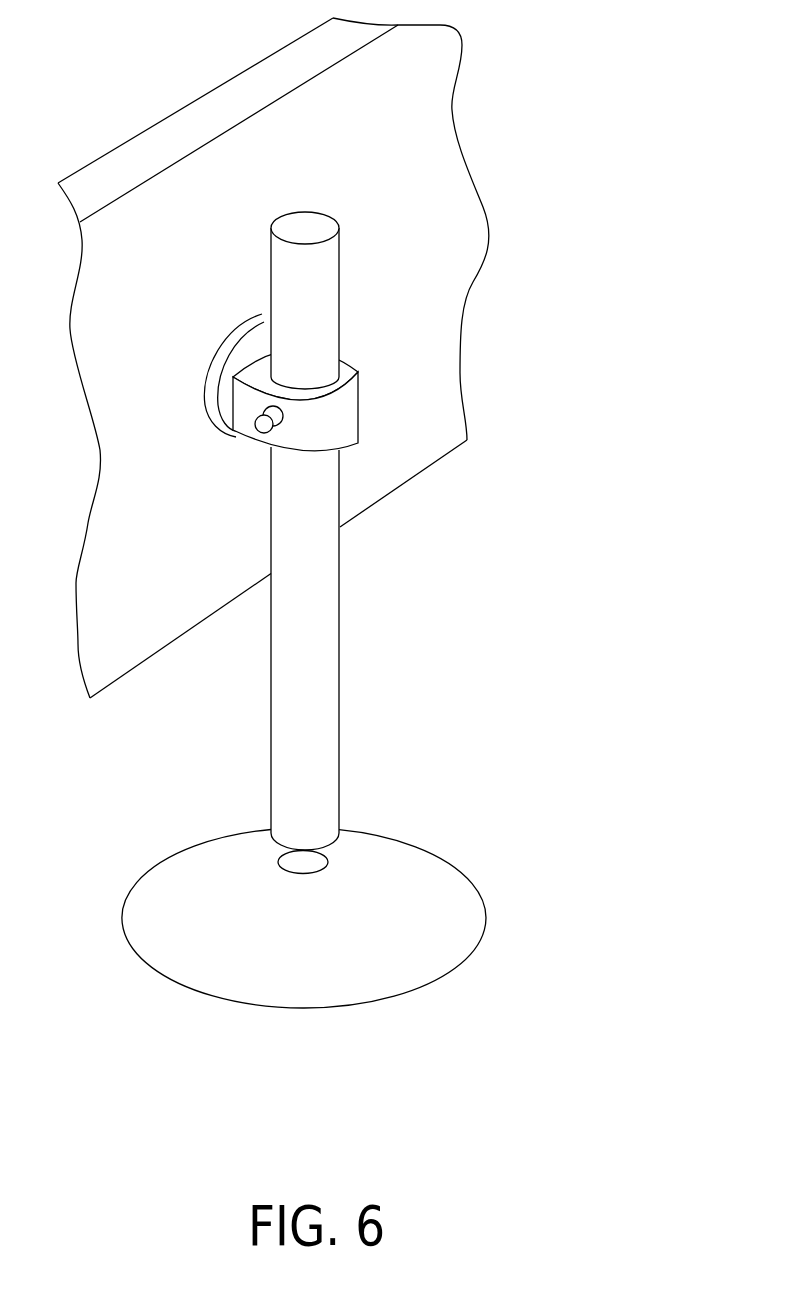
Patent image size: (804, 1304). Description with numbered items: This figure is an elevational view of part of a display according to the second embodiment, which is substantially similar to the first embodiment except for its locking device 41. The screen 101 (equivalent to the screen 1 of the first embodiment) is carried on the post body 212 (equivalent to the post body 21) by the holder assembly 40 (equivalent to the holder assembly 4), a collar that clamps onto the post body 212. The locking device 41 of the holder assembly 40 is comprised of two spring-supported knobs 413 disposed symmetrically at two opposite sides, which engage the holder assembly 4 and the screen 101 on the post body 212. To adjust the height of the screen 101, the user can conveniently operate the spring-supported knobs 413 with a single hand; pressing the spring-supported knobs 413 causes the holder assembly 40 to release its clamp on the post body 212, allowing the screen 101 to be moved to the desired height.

The screen 1 is at (273, 355).
The screen 101 is at (208, 105).
The holder assembly 4 is at (363, 421).
The holder assembly 40 is at (347, 412).
The locking device 41 is at (219, 555).
The spring-supported knob 413 is at (262, 427).
The post body 21 is at (304, 610).
The post body 212 is at (332, 696).